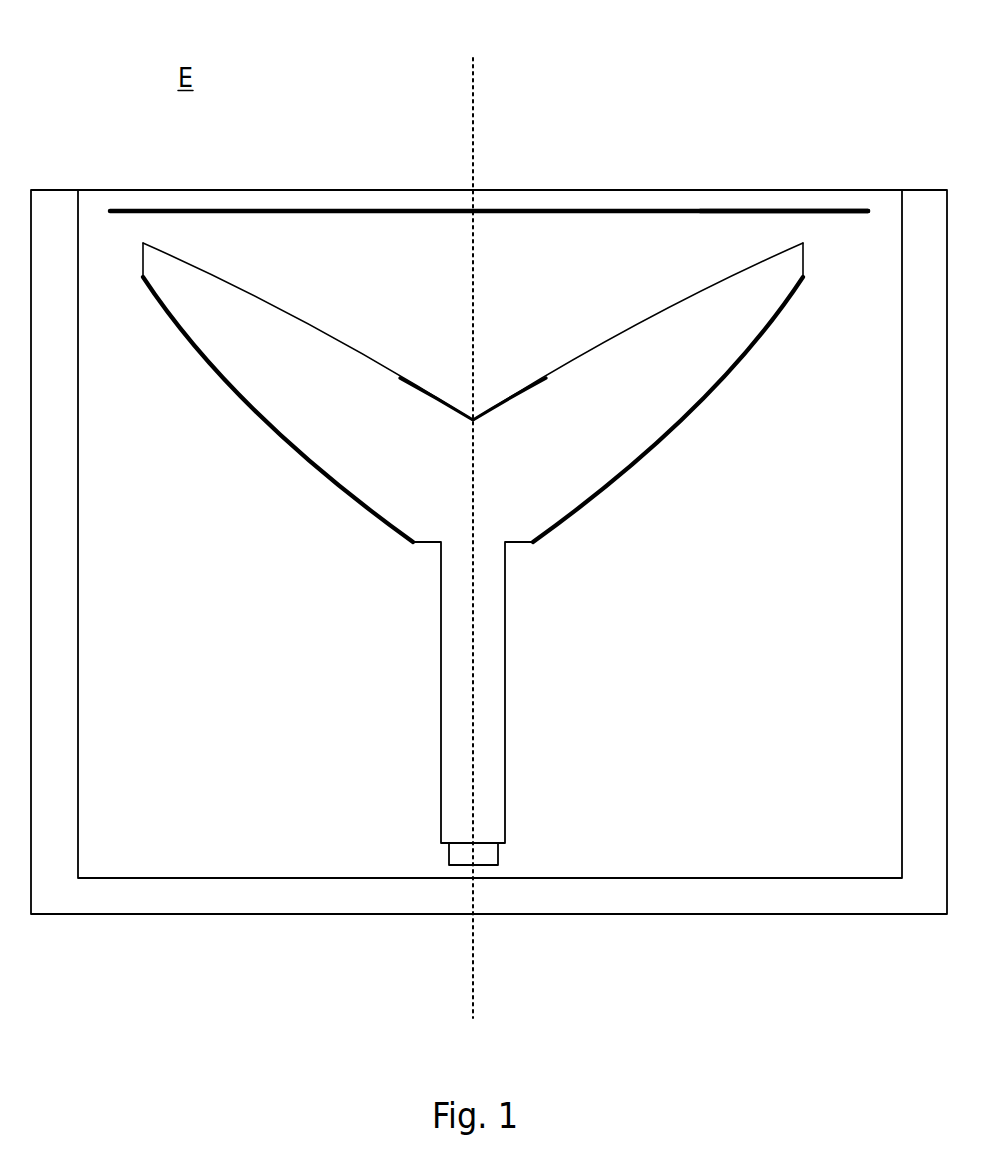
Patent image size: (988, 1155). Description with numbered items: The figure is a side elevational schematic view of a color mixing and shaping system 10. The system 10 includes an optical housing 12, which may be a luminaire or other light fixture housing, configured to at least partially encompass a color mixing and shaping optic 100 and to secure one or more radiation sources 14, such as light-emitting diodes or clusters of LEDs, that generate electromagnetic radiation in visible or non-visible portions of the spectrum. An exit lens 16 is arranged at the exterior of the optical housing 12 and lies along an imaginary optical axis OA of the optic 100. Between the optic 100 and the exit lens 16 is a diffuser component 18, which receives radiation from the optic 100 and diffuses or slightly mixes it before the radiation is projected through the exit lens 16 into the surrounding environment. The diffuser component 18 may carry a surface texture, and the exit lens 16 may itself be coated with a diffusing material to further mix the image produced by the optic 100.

The mixing and shaping system 10 is at (489, 509).
The optical housing 12 is at (688, 914).
The radiation sources 14 is at (498, 858).
The exit lens 16 is at (318, 190).
The diffuser component 18 is at (793, 211).
The color mixing and shaping optic 100 is at (626, 497).
The optical axis OA is at (473, 107).